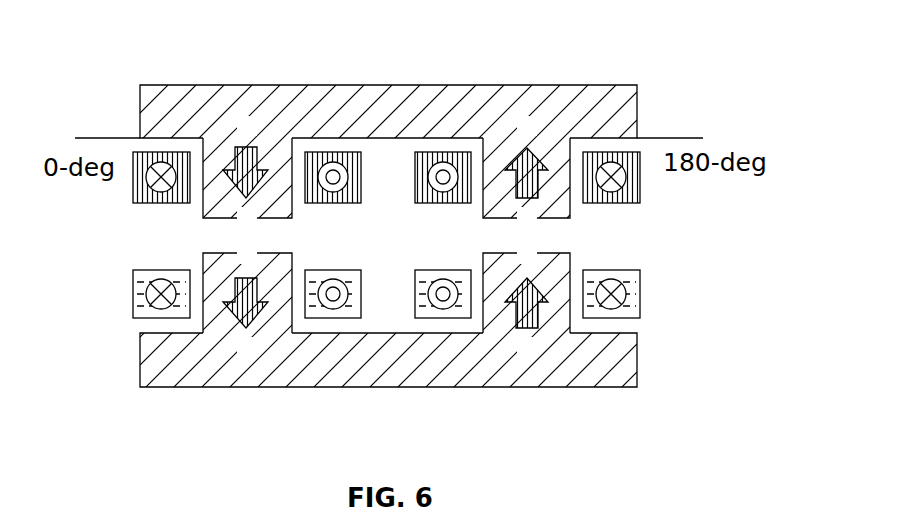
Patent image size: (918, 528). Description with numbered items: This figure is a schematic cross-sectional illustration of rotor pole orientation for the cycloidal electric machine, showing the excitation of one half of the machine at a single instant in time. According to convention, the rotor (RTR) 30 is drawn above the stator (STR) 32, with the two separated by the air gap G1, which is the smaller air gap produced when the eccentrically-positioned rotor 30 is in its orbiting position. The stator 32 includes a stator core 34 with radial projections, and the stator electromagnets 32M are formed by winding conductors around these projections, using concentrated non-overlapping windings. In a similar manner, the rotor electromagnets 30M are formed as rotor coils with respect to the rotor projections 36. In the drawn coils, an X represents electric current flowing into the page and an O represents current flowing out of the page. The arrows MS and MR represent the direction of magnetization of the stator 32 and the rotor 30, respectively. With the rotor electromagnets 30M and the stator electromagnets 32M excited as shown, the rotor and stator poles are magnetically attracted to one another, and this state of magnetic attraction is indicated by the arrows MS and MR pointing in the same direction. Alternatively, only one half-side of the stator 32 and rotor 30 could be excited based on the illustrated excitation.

The rotor 30 is at (407, 123).
The rotor RTR is at (389, 123).
The stator 32 is at (407, 372).
The stator STR is at (388, 345).
The stator core 34 is at (217, 308).
The rotor projections 36 is at (218, 163).
The rotor electromagnets 30M is at (133, 197).
The stator electromagnets 32M is at (133, 294).
The rotor magnetization arrow MR is at (258, 160).
The stator magnetization arrow MS is at (250, 318).
The air gap G1 is at (690, 257).